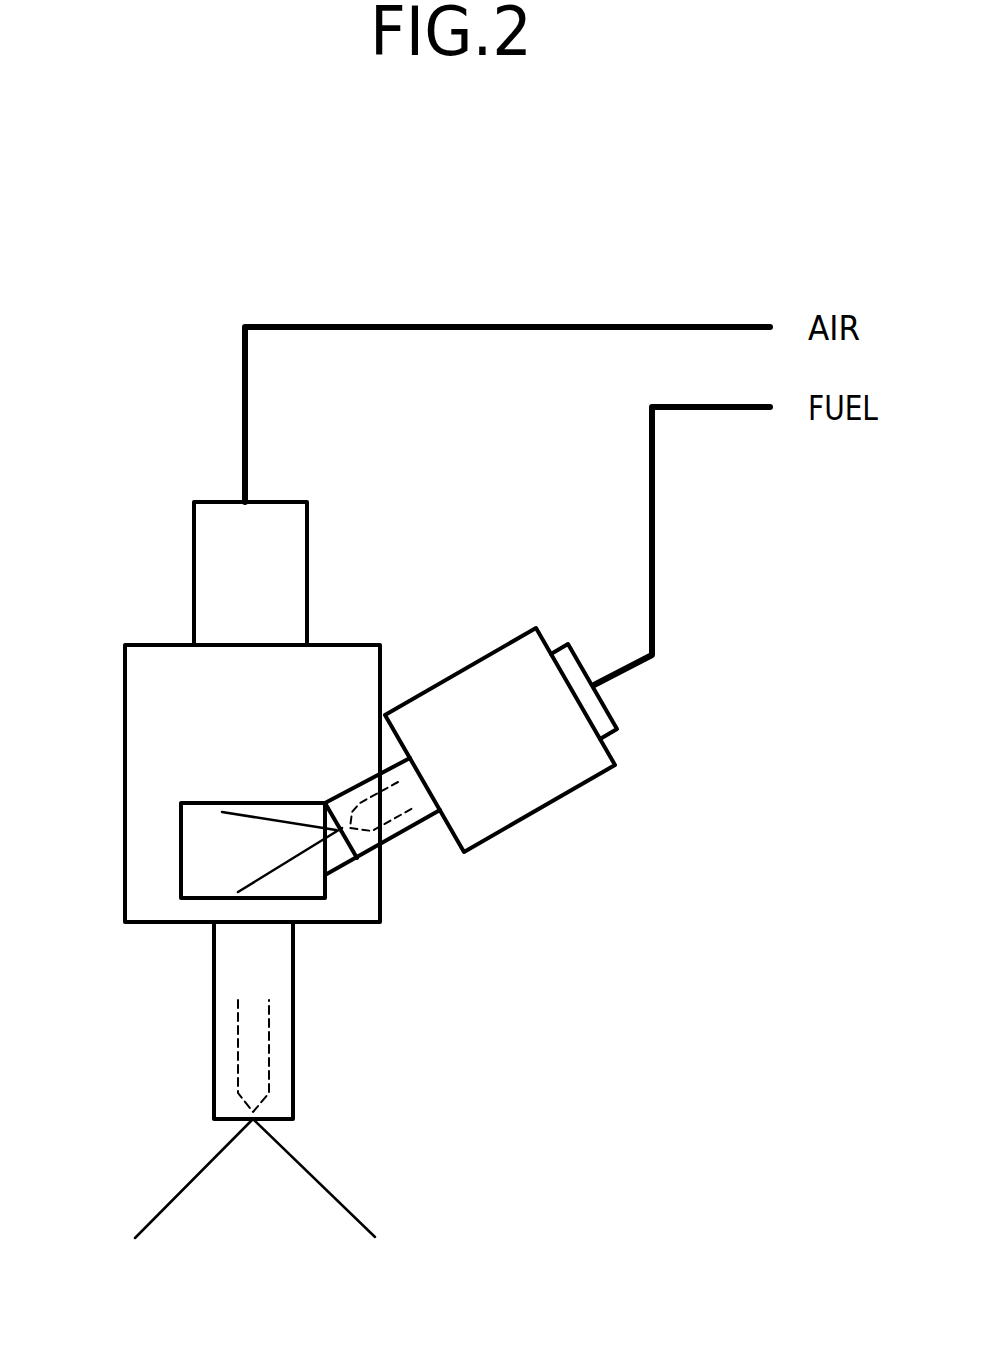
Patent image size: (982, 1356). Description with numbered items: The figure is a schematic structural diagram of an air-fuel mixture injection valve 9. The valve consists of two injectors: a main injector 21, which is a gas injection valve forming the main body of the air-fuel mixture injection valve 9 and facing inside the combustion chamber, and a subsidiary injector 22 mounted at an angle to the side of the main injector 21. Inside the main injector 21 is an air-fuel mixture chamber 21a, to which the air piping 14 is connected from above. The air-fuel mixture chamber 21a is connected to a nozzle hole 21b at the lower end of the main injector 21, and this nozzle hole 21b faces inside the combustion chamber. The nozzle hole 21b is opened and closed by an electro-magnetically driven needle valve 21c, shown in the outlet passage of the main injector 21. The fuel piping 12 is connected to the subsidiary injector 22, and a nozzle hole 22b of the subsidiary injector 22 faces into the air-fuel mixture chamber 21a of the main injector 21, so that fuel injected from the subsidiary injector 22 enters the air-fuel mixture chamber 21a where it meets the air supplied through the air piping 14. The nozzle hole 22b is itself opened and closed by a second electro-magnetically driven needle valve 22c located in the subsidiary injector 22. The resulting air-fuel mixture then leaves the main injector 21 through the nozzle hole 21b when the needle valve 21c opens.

The air-fuel mixture injection valve 9 is at (145, 571).
The fuel piping 12 is at (653, 537).
The air piping 14 is at (248, 416).
The main injector 21 is at (123, 675).
The air-fuel mixture chamber 21a is at (213, 840).
The nozzle hole 21b is at (237, 1128).
The needle valve 21c is at (237, 1057).
The subsidiary injector 22 is at (518, 787).
The nozzle hole 22b is at (340, 843).
The needle valve 22c is at (388, 825).